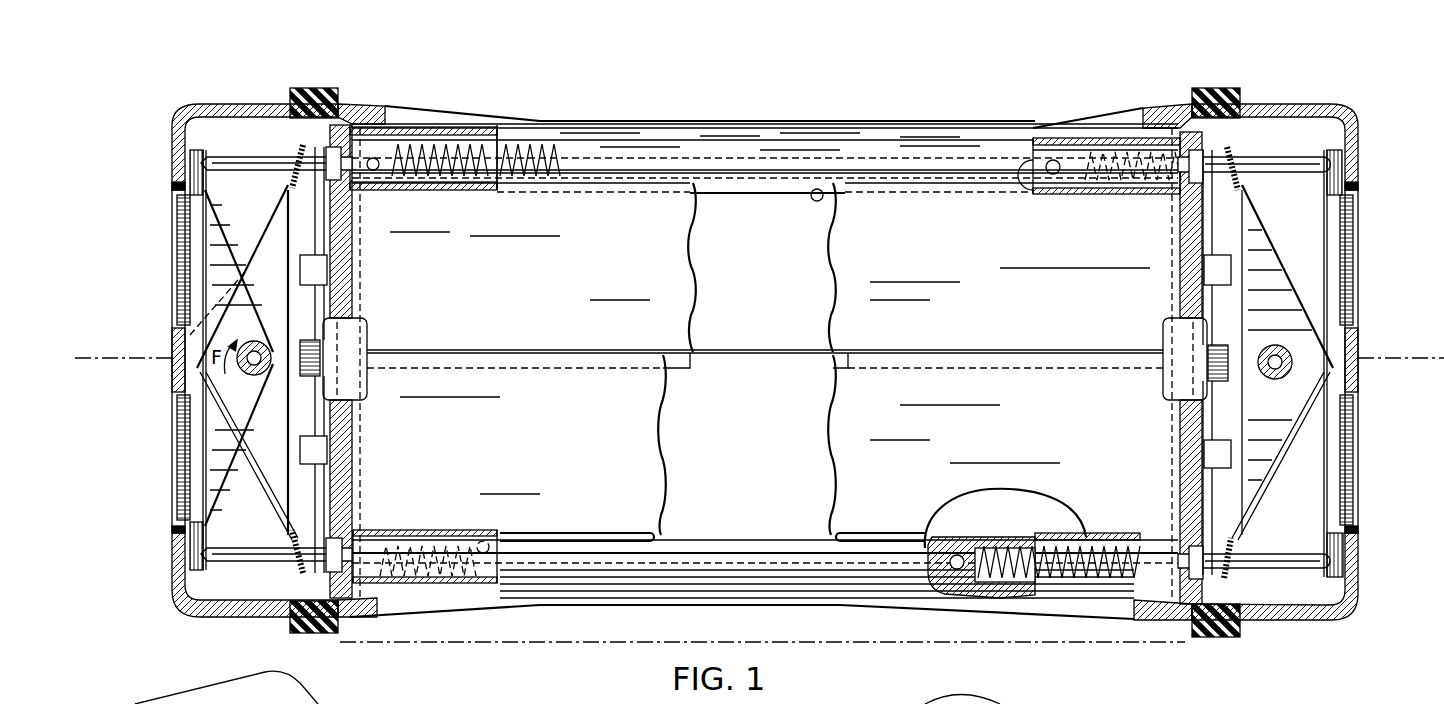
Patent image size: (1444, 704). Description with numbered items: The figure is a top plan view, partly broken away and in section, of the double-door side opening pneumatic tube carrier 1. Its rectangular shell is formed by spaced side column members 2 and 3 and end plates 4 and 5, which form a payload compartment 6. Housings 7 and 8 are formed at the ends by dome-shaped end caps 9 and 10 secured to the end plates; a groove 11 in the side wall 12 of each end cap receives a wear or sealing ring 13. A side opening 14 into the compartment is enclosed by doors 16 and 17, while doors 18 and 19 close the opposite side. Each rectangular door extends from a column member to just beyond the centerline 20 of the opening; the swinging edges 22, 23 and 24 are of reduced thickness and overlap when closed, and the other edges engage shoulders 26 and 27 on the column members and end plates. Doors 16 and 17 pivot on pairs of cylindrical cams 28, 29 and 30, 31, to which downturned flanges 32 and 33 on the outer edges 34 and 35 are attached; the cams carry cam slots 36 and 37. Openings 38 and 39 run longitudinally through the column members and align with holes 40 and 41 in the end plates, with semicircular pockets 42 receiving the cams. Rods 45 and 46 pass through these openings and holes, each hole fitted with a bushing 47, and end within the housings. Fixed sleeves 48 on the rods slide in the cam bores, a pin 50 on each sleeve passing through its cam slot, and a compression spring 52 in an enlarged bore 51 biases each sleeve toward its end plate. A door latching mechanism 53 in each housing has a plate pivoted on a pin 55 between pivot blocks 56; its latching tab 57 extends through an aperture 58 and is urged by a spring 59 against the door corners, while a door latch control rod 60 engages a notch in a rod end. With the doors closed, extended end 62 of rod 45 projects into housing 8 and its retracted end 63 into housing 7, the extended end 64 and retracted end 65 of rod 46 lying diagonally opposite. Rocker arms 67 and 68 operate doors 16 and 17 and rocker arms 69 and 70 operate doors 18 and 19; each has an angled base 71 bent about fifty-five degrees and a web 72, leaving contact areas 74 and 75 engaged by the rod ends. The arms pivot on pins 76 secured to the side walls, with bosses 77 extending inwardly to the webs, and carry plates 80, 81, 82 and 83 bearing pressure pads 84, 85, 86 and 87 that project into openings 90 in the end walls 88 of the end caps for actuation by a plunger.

The carrier 1 is at (718, 100).
The side column member 2 is at (797, 138).
The side column member 3 is at (610, 598).
The end plate 4 is at (1190, 440).
The end plate 5 is at (355, 244).
The payload compartment 6 is at (770, 437).
The housing 7 is at (1372, 129).
The housing 8 is at (170, 571).
The end cap 9 is at (1359, 160).
The end cap 10 is at (172, 176).
The groove 11 is at (290, 104).
The side wall 12 is at (229, 617).
The wear or sealing ring 13 is at (315, 88).
The side opening 14 is at (823, 190).
The door 16 is at (660, 478).
The door 17 is at (690, 270).
The door 18 is at (807, 413).
The door 19 is at (792, 308).
The centerline 20 is at (1415, 358).
The swinging edge 22 is at (608, 350).
The swinging edge 23 is at (683, 366).
The swinging edge 24 is at (745, 346).
The shoulder 26 is at (753, 194).
The shoulder 27 is at (354, 469).
The cam 28 is at (1114, 590).
The cam 29 is at (473, 595).
The cam 30 is at (1044, 135).
The cam 31 is at (460, 135).
The downturned flange 32 is at (440, 532).
The downturned flange 33 is at (475, 190).
The outer edge 34 is at (843, 545).
The outer edge 35 is at (640, 180).
The cam slot 36 is at (438, 555).
The cam slot 37 is at (405, 150).
The opening 38 is at (597, 155).
The opening 39 is at (960, 570).
The hole 40 is at (352, 204).
The hole 41 is at (354, 531).
The pocket 42 is at (1040, 192).
The rod 45 is at (748, 158).
The rod 46 is at (945, 557).
The bushing 47 is at (338, 158).
The fixed sleeve 48 is at (1085, 180).
The pin 50 is at (1056, 174).
The enlarged bore 51 is at (543, 163).
The compression spring 52 is at (541, 176).
The door latching mechanism 53 is at (297, 370).
The pin 55 is at (312, 257).
The pivot block 56 is at (300, 268).
The latching tab 57 is at (360, 330).
The aperture 58 is at (350, 303).
The spring 59 is at (340, 370).
The door latch control rod 60 is at (355, 500).
The extended end 62 is at (210, 163).
The retracted end 63 is at (1233, 168).
The extended end 64 is at (1315, 588).
The retracted end 65 is at (300, 551).
The rocker arm 67 is at (1282, 242).
The rocker arm 68 is at (234, 235).
The rocker arm 69 is at (1287, 503).
The rocker arm 70 is at (234, 485).
The angled base 71 is at (203, 274).
The web 72 is at (1252, 243).
The contact area 74 is at (300, 150).
The contact area 75 is at (203, 150).
The pin 76 is at (249, 342).
The boss 77 is at (252, 378).
The plate 80 is at (1343, 515).
The plate 81 is at (195, 160).
The plate 82 is at (1342, 178).
The plate 83 is at (192, 541).
The pressure pad 84 is at (1352, 430).
The pressure pad 85 is at (186, 237).
The pressure pad 86 is at (1352, 238).
The pressure pad 87 is at (186, 415).
The end wall 88 is at (172, 535).
The opening 90 is at (175, 330).